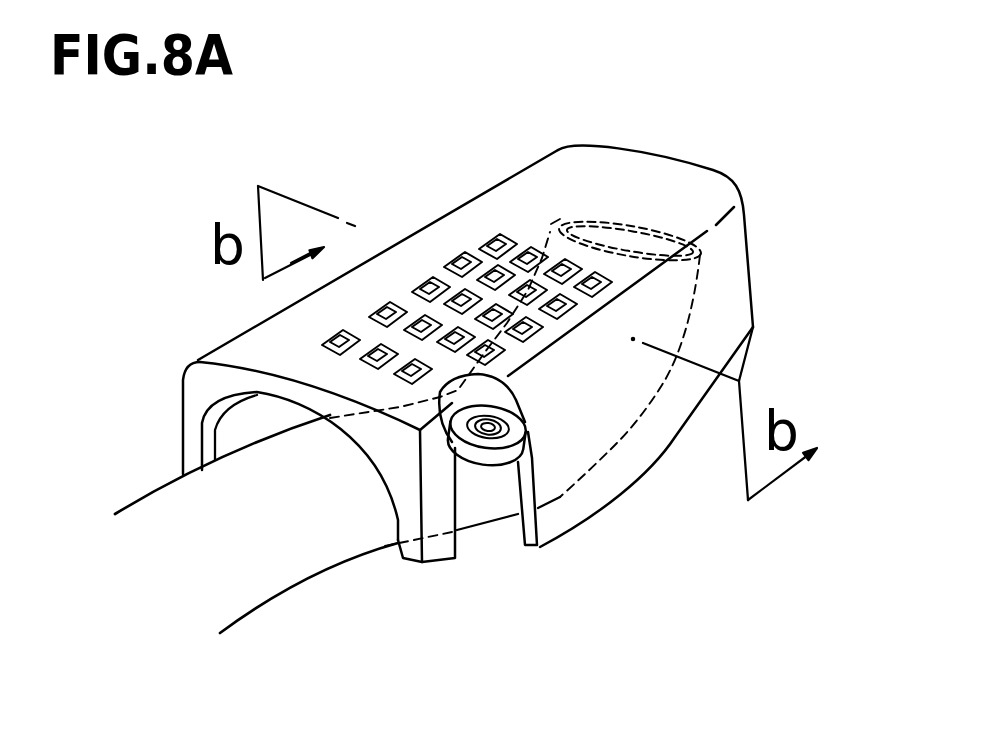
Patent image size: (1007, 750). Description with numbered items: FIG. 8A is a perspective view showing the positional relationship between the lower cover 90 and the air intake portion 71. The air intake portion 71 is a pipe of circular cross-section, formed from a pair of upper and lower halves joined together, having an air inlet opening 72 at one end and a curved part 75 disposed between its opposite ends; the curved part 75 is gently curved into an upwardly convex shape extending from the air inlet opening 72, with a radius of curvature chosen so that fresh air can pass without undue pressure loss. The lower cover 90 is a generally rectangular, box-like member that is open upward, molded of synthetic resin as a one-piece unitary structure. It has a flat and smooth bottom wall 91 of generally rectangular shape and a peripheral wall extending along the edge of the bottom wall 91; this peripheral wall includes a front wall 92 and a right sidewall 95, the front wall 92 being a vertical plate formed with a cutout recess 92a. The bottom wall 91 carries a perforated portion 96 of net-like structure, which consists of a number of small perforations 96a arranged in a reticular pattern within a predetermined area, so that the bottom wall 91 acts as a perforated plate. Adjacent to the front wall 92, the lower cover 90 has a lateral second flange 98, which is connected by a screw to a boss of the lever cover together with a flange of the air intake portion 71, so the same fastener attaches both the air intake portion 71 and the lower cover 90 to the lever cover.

The air intake portion 71 is at (320, 583).
The air inlet opening 72 is at (633, 228).
The curved part 75 is at (619, 441).
The lower cover 90 is at (749, 246).
The bottom wall 91 is at (572, 182).
The front wall 92 is at (204, 385).
The cutout recess 92a is at (208, 436).
The right sidewall 95 is at (725, 314).
The perforated portion 96 is at (475, 44).
The perforations 96a is at (437, 280).
The second flange 98 is at (488, 462).